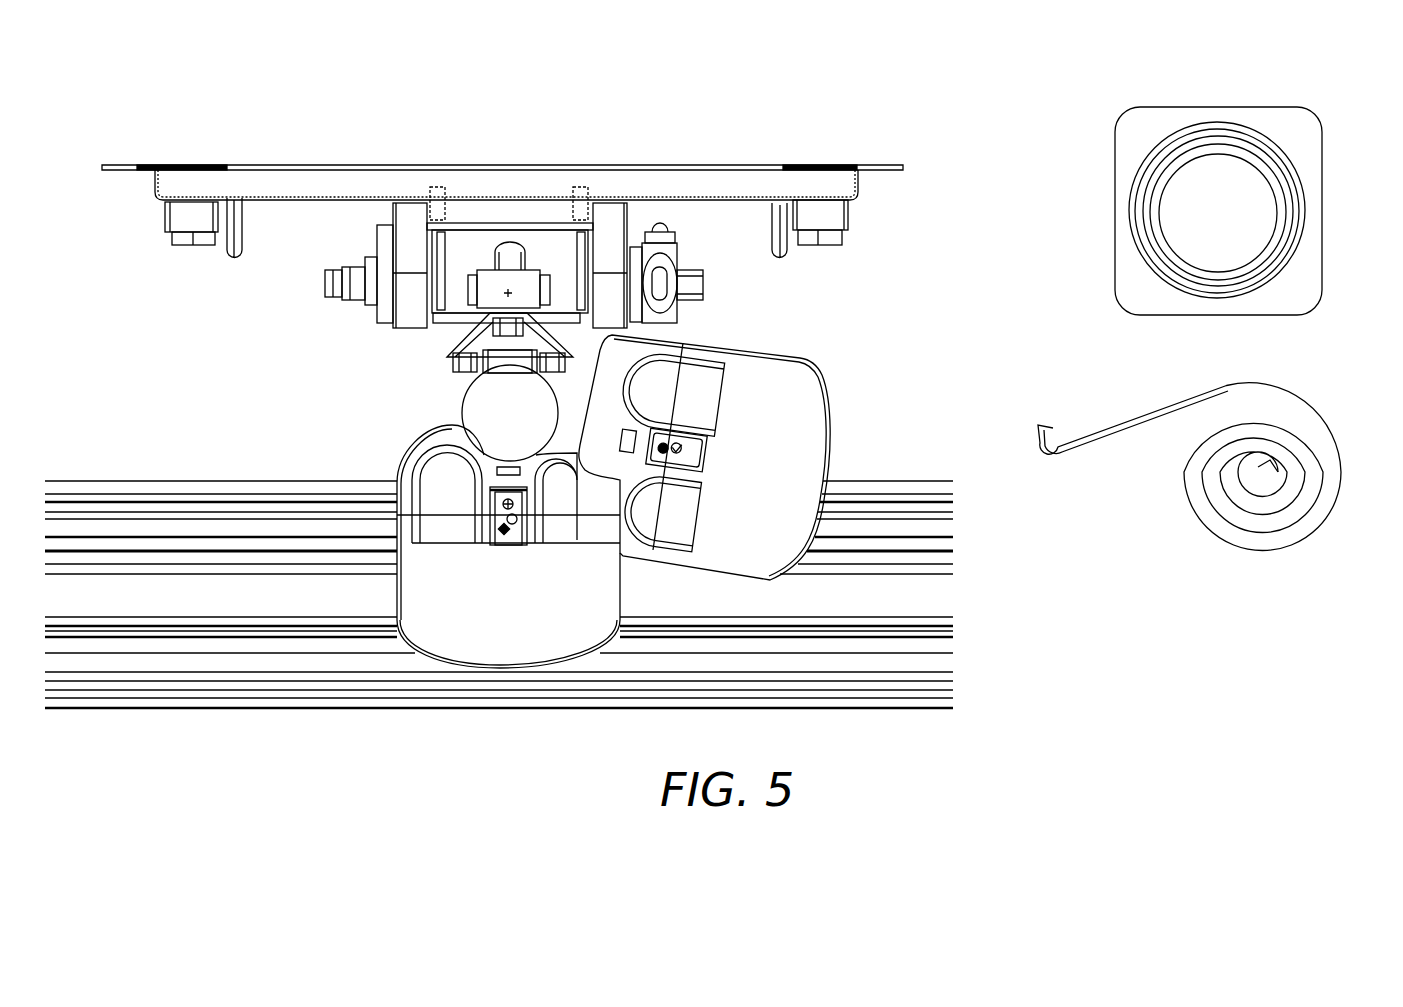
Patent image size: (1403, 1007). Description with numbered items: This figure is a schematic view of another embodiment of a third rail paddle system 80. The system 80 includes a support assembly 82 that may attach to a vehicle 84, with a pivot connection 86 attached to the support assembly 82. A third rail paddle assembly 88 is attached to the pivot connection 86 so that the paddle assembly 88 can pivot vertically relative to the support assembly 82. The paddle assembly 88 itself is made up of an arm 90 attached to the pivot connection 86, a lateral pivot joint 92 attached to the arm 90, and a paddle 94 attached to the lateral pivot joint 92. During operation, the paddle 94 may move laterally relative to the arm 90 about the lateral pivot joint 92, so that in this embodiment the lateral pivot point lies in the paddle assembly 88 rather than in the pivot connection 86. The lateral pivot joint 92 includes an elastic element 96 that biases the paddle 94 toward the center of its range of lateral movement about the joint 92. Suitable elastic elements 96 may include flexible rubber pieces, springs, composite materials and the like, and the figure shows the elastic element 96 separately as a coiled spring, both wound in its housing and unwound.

The system 80 is at (542, 173).
The support assembly 82 is at (870, 222).
The vehicle 84 is at (772, 160).
The pivot connection 86 is at (328, 339).
The third rail paddle assembly 88 is at (891, 457).
The arm 90 is at (418, 375).
The lateral pivot joint 92 is at (460, 408).
The paddle 94 is at (491, 643).
The elastic element 96 is at (1080, 355).